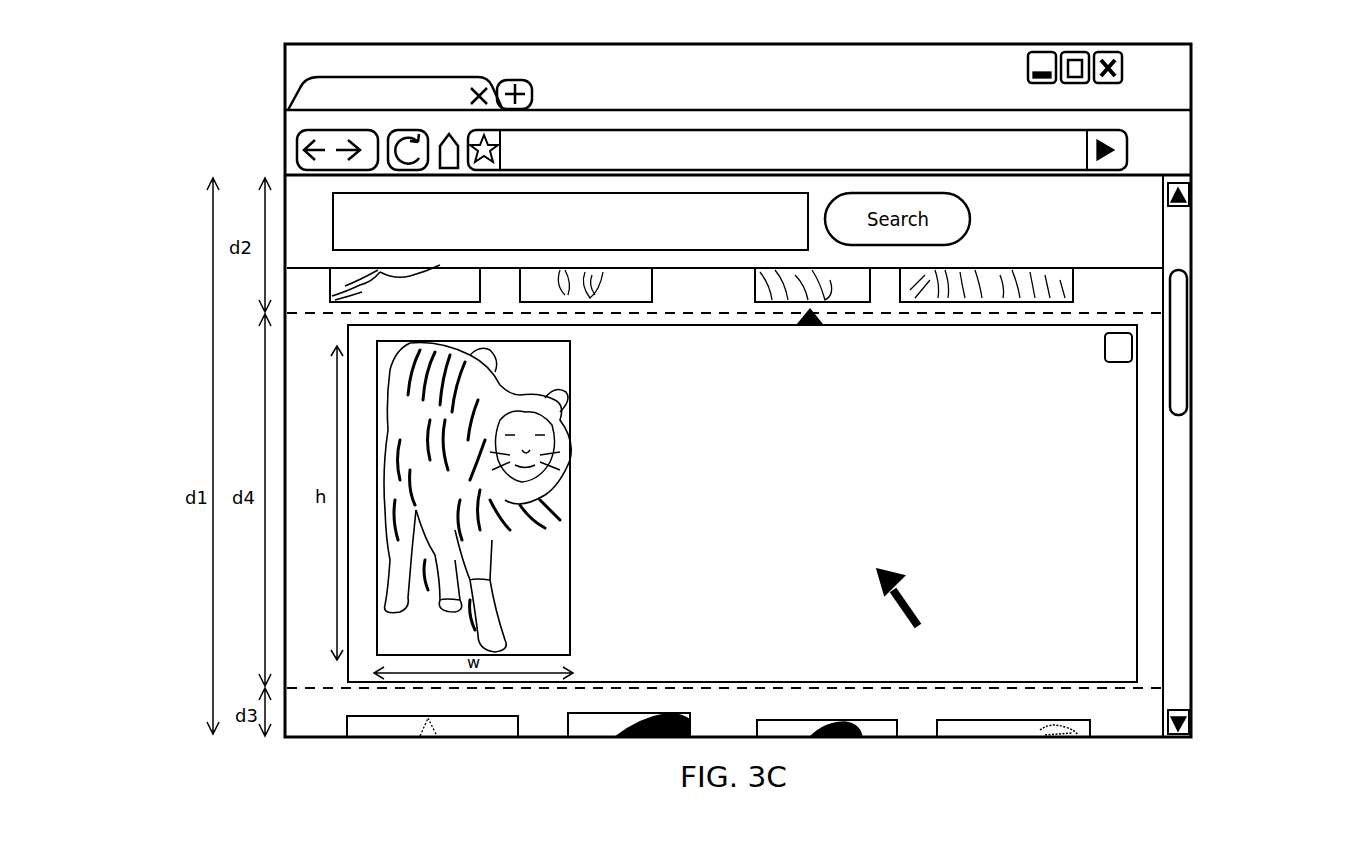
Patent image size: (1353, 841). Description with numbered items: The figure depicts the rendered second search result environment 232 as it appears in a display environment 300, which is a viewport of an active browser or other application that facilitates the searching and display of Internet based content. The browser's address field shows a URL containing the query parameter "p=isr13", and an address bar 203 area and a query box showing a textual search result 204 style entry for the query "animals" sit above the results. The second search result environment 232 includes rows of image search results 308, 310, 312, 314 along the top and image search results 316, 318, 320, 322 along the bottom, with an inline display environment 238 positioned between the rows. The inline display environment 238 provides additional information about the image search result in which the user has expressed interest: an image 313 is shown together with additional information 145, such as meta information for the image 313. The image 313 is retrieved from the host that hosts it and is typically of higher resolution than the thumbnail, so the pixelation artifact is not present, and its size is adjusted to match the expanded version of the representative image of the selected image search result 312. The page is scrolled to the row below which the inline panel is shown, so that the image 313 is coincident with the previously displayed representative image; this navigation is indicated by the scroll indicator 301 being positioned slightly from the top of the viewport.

The display environment 300 is at (1143, 173).
The address bar 203 is at (1064, 157).
The textual search result 204 is at (570, 221).
The scroll indicator 301 is at (1187, 340).
The image search result 308 is at (330, 282).
The image search result 310 is at (638, 304).
The image search result 312 is at (853, 304).
The image search result 314 is at (962, 304).
The image 313 is at (570, 610).
The additional information 145 is at (897, 482).
The inline display environment 238 is at (1080, 520).
The second search result environment 232 is at (725, 710).
The image search result 316 is at (375, 726).
The image search result 318 is at (597, 727).
The image search result 320 is at (870, 726).
The image search result 322 is at (975, 726).